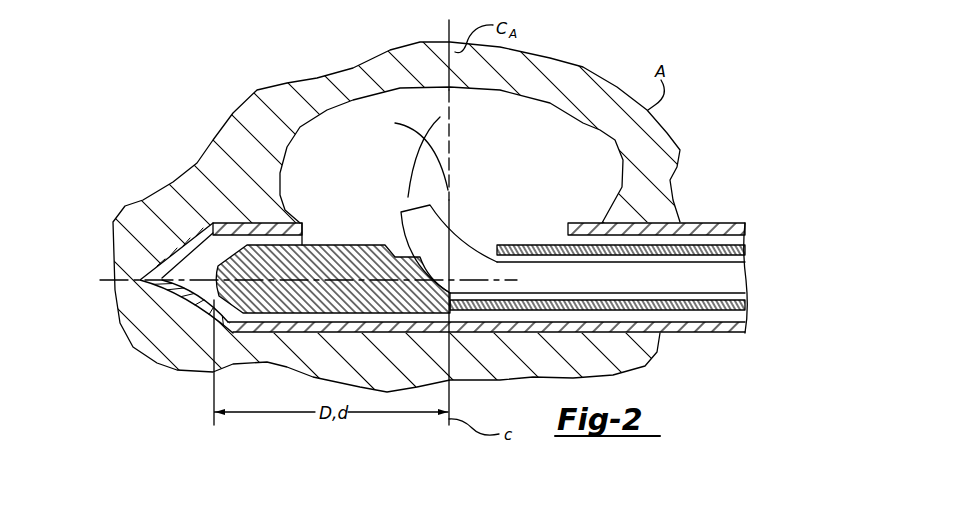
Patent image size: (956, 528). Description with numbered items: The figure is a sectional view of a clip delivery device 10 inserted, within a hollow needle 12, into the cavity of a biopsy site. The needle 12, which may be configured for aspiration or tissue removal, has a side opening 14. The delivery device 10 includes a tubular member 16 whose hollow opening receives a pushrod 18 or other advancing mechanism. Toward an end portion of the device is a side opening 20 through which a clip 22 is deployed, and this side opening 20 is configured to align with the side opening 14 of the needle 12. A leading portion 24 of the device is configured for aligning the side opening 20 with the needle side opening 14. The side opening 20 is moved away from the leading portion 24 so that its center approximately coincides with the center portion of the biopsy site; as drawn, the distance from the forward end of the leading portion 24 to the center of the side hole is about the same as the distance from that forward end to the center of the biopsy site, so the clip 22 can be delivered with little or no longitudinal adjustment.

The clip delivery device 10 is at (470, 210).
The hollow needle 12 is at (673, 328).
The side opening 14 is at (542, 201).
The tubular member 16 is at (733, 312).
The pushrod 18 is at (740, 280).
The side opening 20 is at (478, 240).
The clip 22 is at (429, 133).
The leading portion 24 is at (326, 258).